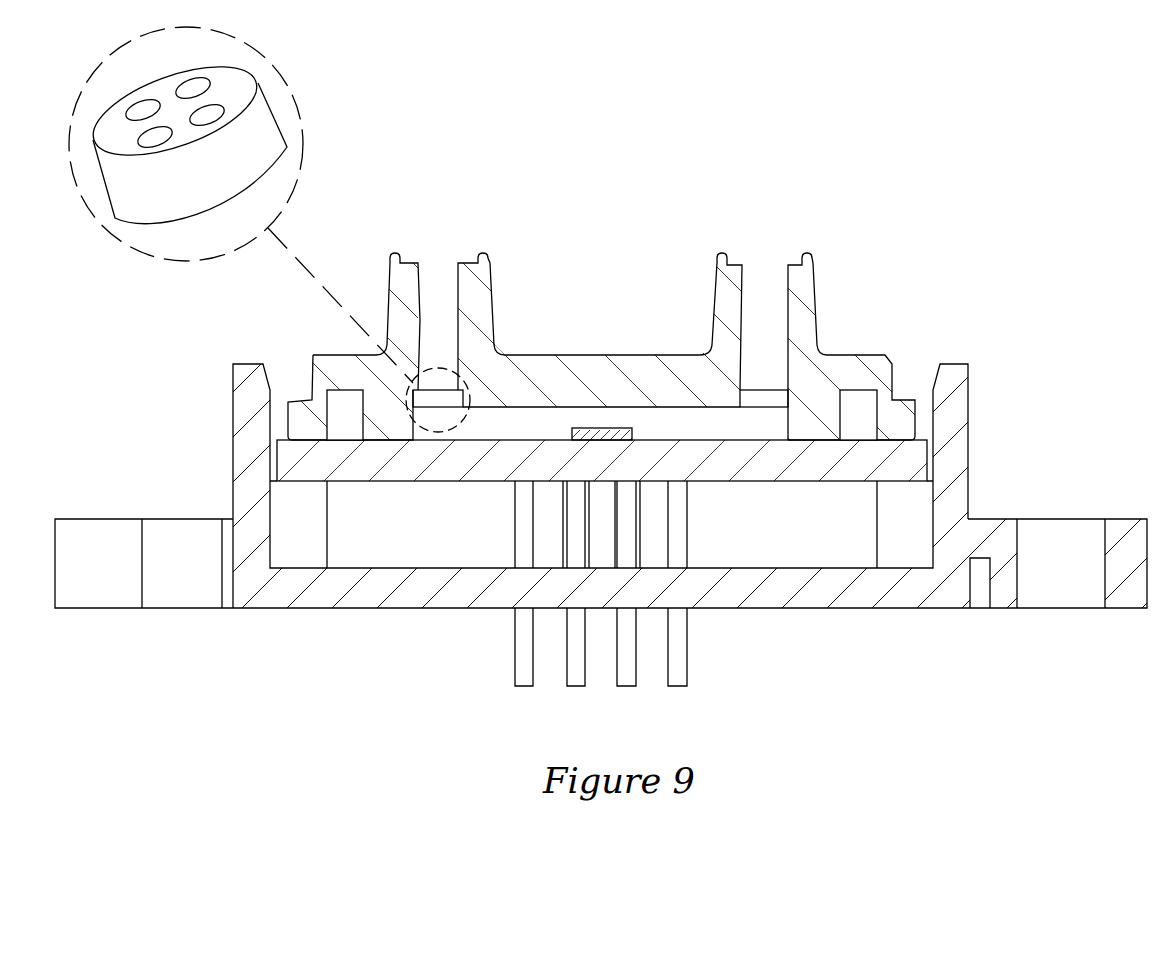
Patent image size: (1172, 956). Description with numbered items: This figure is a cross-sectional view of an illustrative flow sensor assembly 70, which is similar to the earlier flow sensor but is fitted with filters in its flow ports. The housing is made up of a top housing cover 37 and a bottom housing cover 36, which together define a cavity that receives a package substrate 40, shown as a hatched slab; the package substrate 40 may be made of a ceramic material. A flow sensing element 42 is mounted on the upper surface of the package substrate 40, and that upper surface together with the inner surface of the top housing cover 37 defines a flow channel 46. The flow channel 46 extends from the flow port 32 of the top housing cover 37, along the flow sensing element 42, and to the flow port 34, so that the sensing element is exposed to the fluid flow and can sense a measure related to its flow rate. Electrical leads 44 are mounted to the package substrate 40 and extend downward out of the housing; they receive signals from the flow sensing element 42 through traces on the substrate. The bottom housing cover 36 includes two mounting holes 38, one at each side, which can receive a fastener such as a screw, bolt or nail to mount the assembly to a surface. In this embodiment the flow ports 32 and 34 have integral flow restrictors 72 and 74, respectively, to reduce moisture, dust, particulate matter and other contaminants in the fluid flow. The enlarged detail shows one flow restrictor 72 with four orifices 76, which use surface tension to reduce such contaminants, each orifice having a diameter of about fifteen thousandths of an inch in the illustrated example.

The flow sensor assembly 70 is at (965, 175).
The flow restrictor 72 is at (438, 397).
The orifices 76 is at (143, 110).
The flow port 32 is at (485, 292).
The flow port 34 is at (808, 292).
The top housing cover 37 is at (595, 360).
The bottom housing cover 36 is at (960, 433).
The mounting holes 38 is at (175, 530).
The package substrate 40 is at (853, 457).
The flow sensing element 42 is at (583, 433).
The electrical leads 44 is at (625, 672).
The flow channel 46 is at (703, 423).
The flow restrictor 74 is at (762, 397).